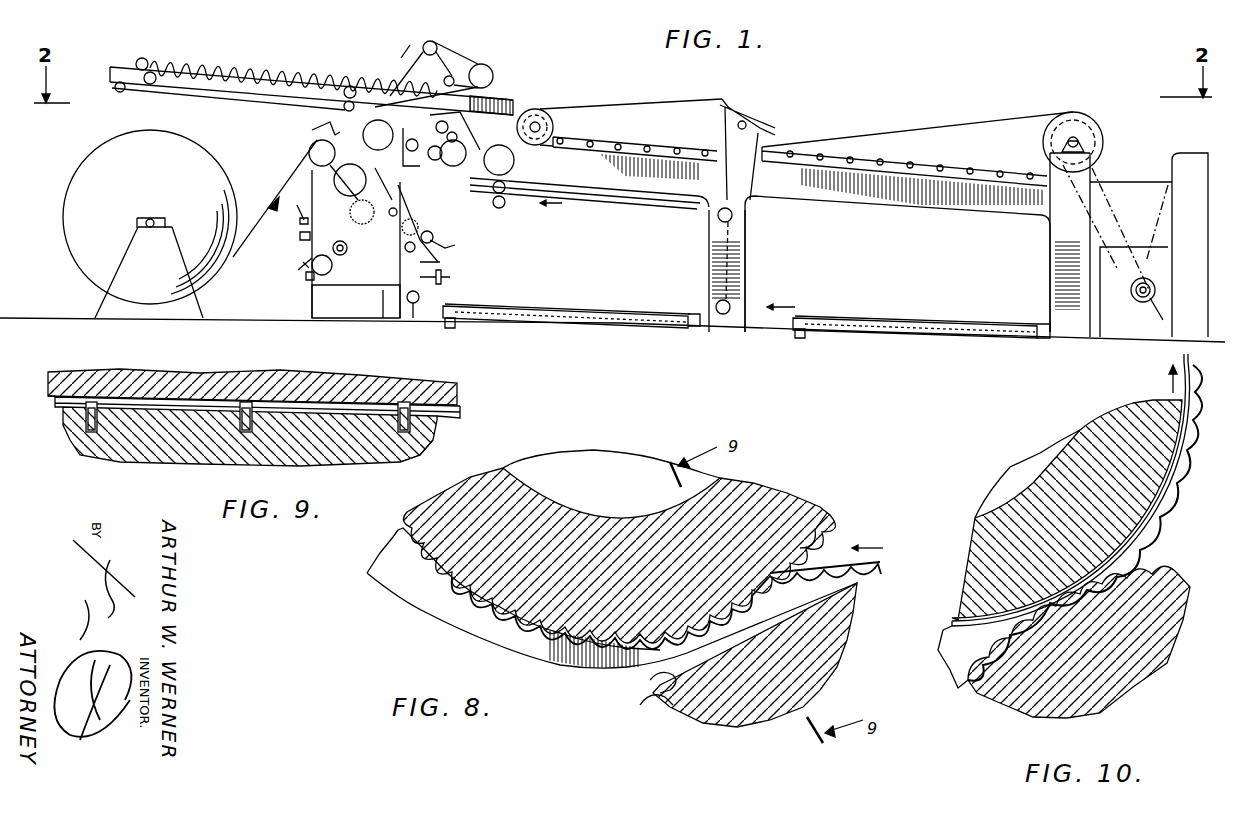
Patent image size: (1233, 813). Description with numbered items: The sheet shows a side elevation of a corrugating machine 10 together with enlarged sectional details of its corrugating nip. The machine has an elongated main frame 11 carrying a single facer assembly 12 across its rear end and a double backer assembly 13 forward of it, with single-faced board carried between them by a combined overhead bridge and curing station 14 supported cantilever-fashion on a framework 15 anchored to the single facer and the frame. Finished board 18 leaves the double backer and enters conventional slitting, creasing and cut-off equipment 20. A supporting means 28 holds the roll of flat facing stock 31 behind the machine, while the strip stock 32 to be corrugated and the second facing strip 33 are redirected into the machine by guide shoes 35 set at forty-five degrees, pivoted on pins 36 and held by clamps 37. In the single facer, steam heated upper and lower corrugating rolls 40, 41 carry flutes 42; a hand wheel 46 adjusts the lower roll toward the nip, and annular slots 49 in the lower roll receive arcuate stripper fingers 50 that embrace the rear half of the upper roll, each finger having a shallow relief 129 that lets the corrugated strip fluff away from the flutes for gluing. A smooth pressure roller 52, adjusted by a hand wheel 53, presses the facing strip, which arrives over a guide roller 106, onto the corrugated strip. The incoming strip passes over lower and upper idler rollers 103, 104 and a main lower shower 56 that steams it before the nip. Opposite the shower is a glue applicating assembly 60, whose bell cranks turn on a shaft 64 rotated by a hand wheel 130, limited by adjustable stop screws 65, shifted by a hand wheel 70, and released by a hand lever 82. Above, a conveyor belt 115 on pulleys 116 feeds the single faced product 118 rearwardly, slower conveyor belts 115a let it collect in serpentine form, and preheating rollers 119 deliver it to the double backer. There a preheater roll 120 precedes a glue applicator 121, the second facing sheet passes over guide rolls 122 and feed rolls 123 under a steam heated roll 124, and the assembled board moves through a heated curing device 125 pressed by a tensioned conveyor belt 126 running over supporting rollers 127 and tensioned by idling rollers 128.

In FIG. 1, the corrugating machine 10 is at (1036, 76).
In FIG. 1, the main frame 11 is at (370, 304).
In FIG. 1, the single facer assembly 12 is at (294, 277).
In FIG. 1, the double backer assembly 13 is at (543, 216).
In FIG. 1, the combined overhead bridge and curing station 14 is at (249, 44).
In FIG. 1, the framework 15 is at (115, 58).
In FIG. 1, the finished board 18 is at (1116, 178).
In FIG. 1, the slitting, creasing and cut-off equipment 20 is at (1190, 152).
In FIG. 1, the supporting means 28 is at (172, 228).
In FIG. 1, the roll of flat facing stock 31 is at (282, 176).
In FIG. 10, the roll of flat facing stock 31 is at (953, 622).
In FIG. 1, the strip stock to be corrugated 32 is at (442, 263).
In FIG. 9, the strip stock to be corrugated 32 is at (440, 424).
In FIG. 8, the strip stock to be corrugated 32 is at (868, 572).
In FIG. 10, the strip stock to be corrugated 32 is at (1195, 485).
In FIG. 1, the second facing strip 33 is at (657, 210).
In FIG. 1, the guide shoe 35 is at (603, 326).
In FIG. 1, the pins 36 is at (452, 326).
In FIG. 1, the clamps 37 is at (692, 312).
In FIG. 1, the upper corrugating roll 40 is at (375, 205).
In FIG. 9, the upper corrugating roll 40 is at (457, 387).
In FIG. 8, the upper corrugating roll 40 is at (777, 490).
In FIG. 10, the upper corrugating roll 40 is at (1177, 582).
In FIG. 1, the lower corrugating roll 41 is at (375, 303).
In FIG. 9, the lower corrugating roll 41 is at (413, 455).
In FIG. 8, the lower corrugating roll 41 is at (838, 633).
In FIG. 9, the flutes 42 is at (245, 402).
In FIG. 8, the flutes 42 is at (833, 530).
In FIG. 1, the hand wheel 46 is at (443, 280).
In FIG. 9, the annular slots 49 is at (83, 430).
In FIG. 8, the annular slots 49 is at (647, 700).
In FIG. 9, the stripper fingers 50 is at (87, 430).
In FIG. 8, the stripper fingers 50 is at (565, 652).
In FIG. 10, the stripper fingers 50 is at (948, 677).
In FIG. 1, the pressure roller 52 is at (334, 184).
In FIG. 10, the pressure roller 52 is at (977, 542).
In FIG. 1, the adjusting hand wheel 53 is at (318, 132).
In FIG. 1, the main lower shower 56 is at (418, 226).
In FIG. 1, the glue applicating assembly 60 is at (300, 238).
In FIG. 1, the shaft 64 is at (356, 301).
In FIG. 1, the adjustable stop screws 65 is at (305, 282).
In FIG. 1, the hand wheel 70 is at (345, 256).
In FIG. 1, the hand lever 82 is at (298, 220).
In FIG. 1, the lower idler roller 103 is at (414, 305).
In FIG. 1, the upper idler roller 104 is at (450, 247).
In FIG. 1, the guide roller 106 is at (309, 155).
In FIG. 1, the conveyor belt 115 is at (186, 86).
In FIG. 1, the conveyor belts 115a is at (216, 82).
In FIG. 1, the pulleys 116 is at (125, 92).
In FIG. 1, the single faced product 118 is at (297, 62).
In FIG. 1, the preheating rollers 119 is at (456, 74).
In FIG. 1, the preheater roll 120 is at (377, 150).
In FIG. 1, the glue applicator 121 is at (443, 167).
In FIG. 1, the guide rolls 122 is at (718, 221).
In FIG. 1, the feed rolls 123 is at (500, 210).
In FIG. 1, the steam heated roll 124 is at (515, 162).
In FIG. 1, the heated curing device 125 is at (661, 128).
In FIG. 1, the tensioned conveyor belt 126 is at (925, 118).
In FIG. 1, the supporting rollers 127 is at (556, 124).
In FIG. 1, the idling rollers 128 is at (728, 100).
In FIG. 8, the relief 129 is at (487, 618).
In FIG. 1, the hand wheel 130 is at (297, 265).